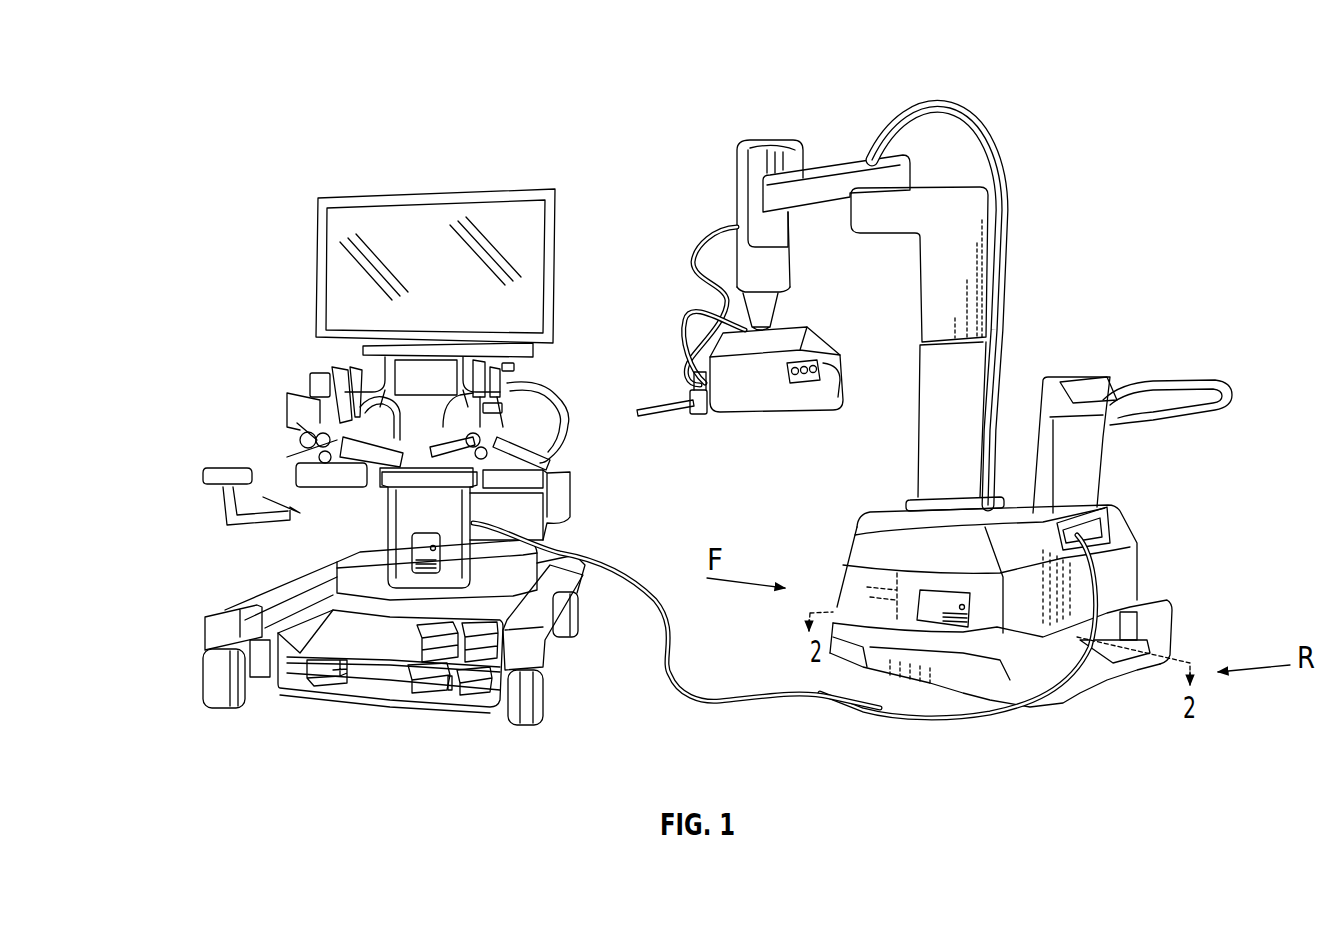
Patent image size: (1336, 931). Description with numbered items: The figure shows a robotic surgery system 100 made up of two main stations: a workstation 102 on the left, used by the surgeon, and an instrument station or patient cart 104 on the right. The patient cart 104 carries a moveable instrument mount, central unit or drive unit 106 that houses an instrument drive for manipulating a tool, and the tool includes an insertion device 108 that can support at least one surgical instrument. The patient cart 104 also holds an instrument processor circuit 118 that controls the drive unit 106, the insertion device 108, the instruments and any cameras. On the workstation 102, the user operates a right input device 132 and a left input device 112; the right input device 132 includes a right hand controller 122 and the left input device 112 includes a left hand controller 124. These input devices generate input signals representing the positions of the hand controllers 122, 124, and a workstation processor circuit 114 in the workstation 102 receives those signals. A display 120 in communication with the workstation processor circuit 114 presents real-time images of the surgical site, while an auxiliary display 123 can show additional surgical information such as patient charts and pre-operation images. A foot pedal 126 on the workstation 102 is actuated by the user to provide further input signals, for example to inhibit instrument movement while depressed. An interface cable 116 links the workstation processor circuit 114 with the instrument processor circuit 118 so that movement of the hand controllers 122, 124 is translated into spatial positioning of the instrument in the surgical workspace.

The robotic surgery system 100 is at (691, 68).
The workstation 102 is at (221, 131).
The patient cart 104 is at (1041, 133).
The drive unit 106 is at (720, 338).
The insertion device 108 is at (686, 405).
The left input device 112 is at (281, 410).
The workstation processor circuit 114 is at (401, 543).
The interface cable 116 is at (707, 700).
The instrument processor circuit 118 is at (920, 603).
The display 120 is at (434, 193).
The right hand controller 122 is at (532, 492).
The auxiliary display 123 is at (420, 380).
The left hand controller 124 is at (292, 437).
The foot pedal 126 is at (338, 687).
The right input device 132 is at (507, 412).